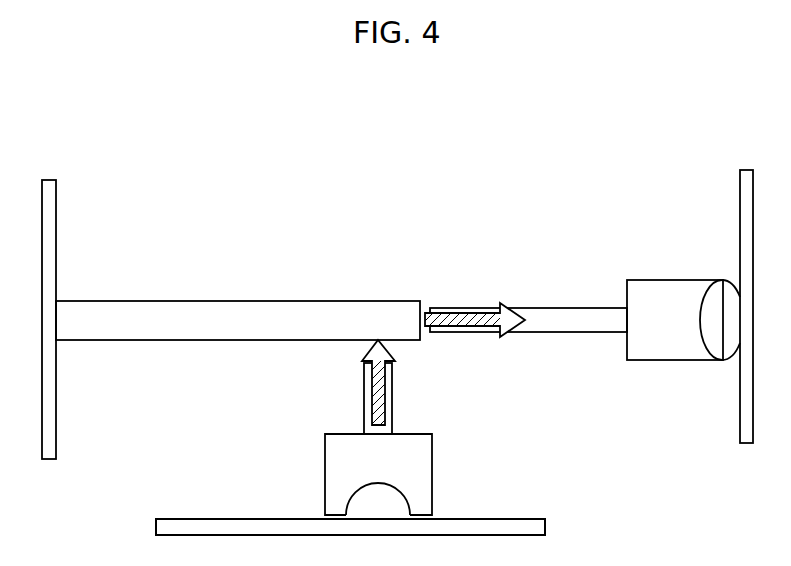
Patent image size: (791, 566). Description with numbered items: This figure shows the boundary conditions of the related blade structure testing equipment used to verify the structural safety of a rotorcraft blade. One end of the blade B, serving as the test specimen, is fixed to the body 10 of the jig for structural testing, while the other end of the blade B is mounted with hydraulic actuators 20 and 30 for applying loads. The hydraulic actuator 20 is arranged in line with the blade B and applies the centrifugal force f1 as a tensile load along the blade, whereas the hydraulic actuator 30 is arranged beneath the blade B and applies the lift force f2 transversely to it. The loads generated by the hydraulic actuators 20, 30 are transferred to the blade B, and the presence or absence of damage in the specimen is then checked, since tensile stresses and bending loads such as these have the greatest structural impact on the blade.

The body 10 is at (48, 423).
The hydraulic actuator 20 is at (652, 288).
The hydraulic actuator 30 is at (425, 452).
The blade B is at (220, 315).
The centrifugal force f1 is at (473, 323).
The lift force f2 is at (377, 398).